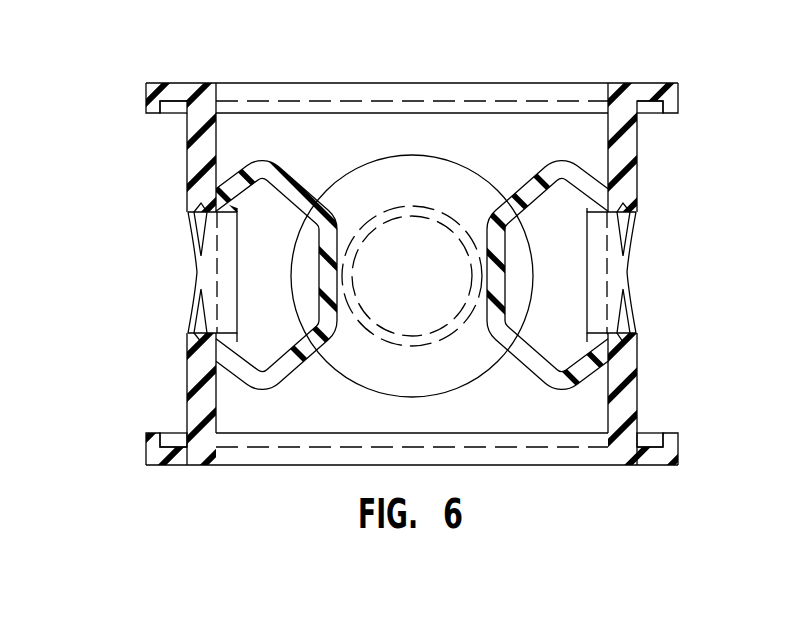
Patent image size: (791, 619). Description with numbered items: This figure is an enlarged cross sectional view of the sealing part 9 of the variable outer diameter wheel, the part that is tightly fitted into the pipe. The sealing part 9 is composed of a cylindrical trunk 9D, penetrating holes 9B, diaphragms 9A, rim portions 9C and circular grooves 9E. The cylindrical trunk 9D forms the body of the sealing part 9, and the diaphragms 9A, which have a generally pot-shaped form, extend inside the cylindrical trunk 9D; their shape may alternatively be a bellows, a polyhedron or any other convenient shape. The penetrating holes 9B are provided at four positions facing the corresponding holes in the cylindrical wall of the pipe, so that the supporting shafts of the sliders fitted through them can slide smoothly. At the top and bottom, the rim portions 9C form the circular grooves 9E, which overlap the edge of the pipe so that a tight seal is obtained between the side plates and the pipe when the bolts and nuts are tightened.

The sealing part 9 is at (652, 37).
The diaphragms 9A is at (288, 174).
The penetrating holes 9B is at (197, 272).
The rim portions 9C is at (146, 98).
The cylindrical trunk 9D is at (623, 160).
The circular grooves 9E is at (186, 103).